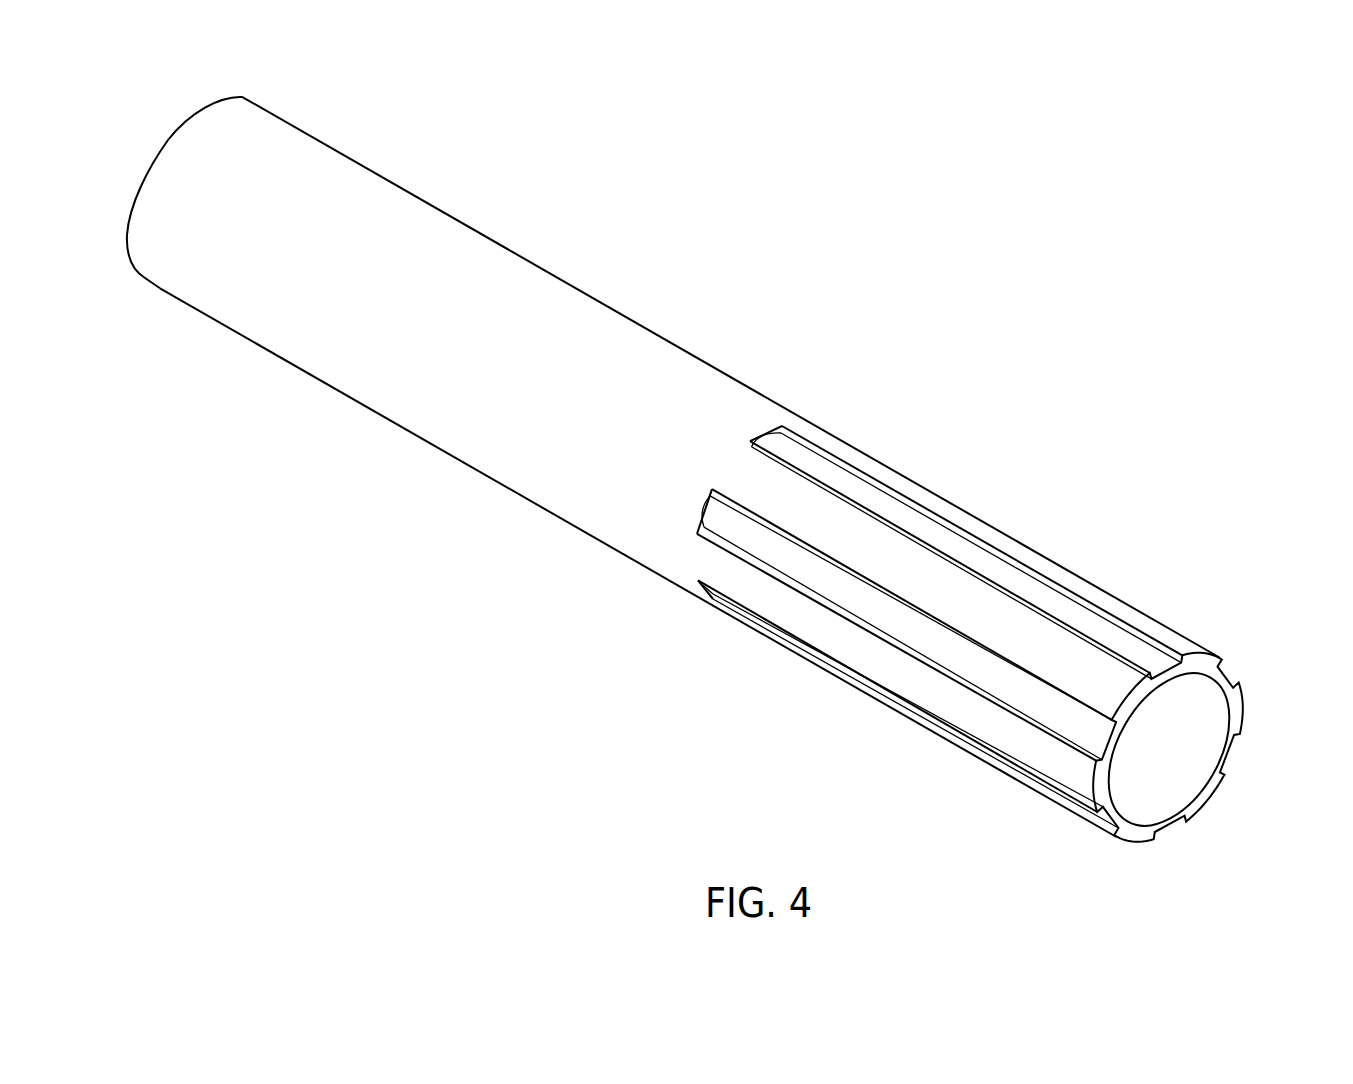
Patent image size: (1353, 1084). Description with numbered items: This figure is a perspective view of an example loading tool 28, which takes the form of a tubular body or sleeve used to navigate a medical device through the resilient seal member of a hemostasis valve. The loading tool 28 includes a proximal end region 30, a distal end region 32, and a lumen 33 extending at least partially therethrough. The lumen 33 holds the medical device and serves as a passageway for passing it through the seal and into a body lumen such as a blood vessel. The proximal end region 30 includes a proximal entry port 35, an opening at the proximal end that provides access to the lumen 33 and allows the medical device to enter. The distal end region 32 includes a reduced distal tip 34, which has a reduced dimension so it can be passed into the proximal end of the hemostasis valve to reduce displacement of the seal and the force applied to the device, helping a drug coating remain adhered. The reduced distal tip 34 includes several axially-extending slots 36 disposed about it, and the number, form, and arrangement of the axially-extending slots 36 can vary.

The loading tool 28 is at (853, 358).
The proximal end region 30 is at (403, 395).
The distal end region 32 is at (1003, 747).
The lumen 33 is at (1183, 783).
The reduced distal tip 34 is at (1018, 542).
The proximal entry port 35 is at (178, 122).
The axially-extending slots 36 is at (1150, 665).